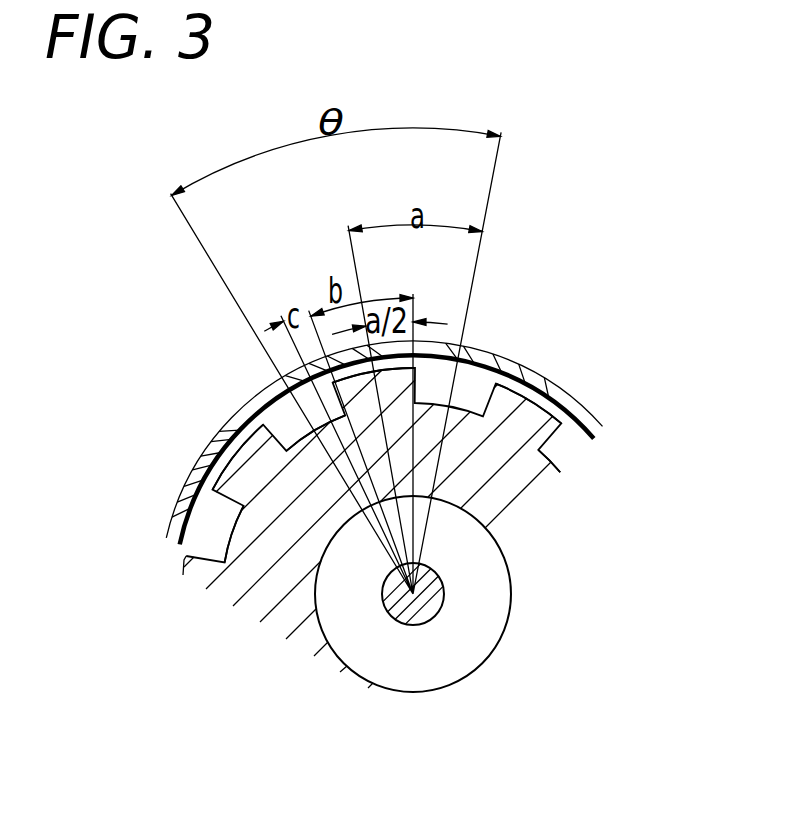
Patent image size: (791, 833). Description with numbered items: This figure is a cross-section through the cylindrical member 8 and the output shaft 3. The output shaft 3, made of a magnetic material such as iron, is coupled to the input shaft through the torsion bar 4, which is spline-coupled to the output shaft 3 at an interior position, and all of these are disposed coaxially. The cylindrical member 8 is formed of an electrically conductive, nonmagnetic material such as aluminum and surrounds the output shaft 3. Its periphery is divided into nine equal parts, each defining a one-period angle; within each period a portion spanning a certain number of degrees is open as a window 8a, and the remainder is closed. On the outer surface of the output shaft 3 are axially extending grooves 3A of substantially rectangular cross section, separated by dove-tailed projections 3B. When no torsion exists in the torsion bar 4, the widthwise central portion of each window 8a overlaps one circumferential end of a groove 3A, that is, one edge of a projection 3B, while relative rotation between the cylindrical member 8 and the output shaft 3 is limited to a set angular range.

The output shaft 3 is at (510, 487).
The grooves 3A is at (287, 438).
The projection 3B is at (440, 360).
The torsion bar 4 is at (435, 600).
The cylindrical member 8 is at (578, 392).
The windows 8a is at (458, 346).